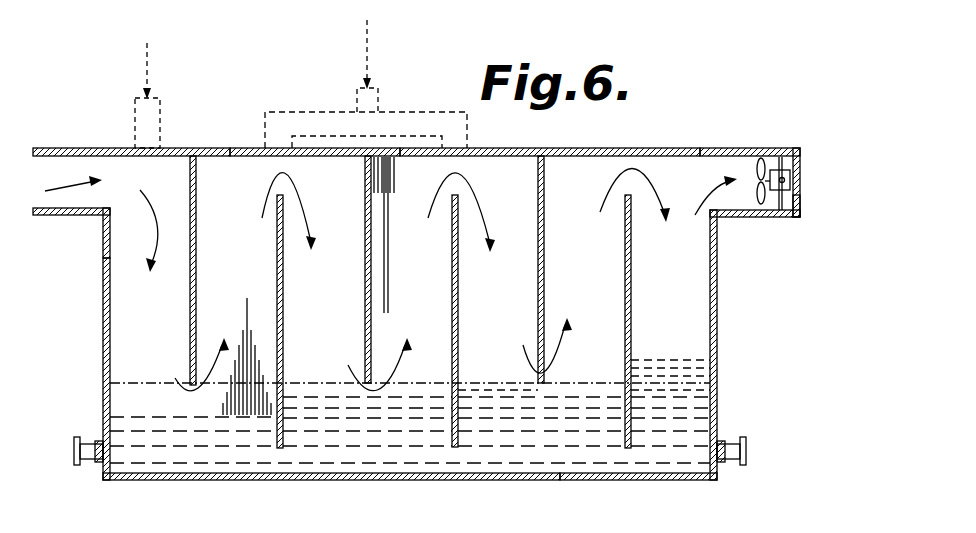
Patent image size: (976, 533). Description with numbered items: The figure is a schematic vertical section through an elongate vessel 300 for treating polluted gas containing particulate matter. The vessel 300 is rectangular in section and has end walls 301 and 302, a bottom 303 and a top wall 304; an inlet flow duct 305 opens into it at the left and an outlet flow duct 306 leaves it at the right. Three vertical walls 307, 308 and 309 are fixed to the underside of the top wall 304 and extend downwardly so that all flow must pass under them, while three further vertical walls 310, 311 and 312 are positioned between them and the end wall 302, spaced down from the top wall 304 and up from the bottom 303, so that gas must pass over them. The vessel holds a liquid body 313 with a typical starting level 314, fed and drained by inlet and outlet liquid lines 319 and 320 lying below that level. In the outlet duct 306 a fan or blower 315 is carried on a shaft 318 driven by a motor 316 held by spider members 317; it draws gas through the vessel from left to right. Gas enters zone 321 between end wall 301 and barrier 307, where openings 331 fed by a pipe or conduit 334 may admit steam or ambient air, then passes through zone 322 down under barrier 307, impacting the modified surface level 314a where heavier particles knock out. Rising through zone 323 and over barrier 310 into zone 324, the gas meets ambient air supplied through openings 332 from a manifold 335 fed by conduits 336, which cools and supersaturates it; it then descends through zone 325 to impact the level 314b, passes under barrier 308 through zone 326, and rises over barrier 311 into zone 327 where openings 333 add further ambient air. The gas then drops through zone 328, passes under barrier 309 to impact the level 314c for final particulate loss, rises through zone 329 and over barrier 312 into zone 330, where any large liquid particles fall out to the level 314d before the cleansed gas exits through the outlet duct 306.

The elongate vessel 300 is at (703, 93).
The end wall 301 is at (102, 246).
The end wall 302 is at (718, 305).
The bottom 303 is at (495, 480).
The top wall 304 is at (594, 147).
The inlet flow duct 305 is at (70, 147).
The outlet flow duct 306 is at (764, 147).
The vertical wall 307 is at (189, 308).
The vertical wall 308 is at (372, 314).
The vertical wall 309 is at (545, 236).
The vertical wall 310 is at (283, 340).
The vertical wall 311 is at (452, 246).
The vertical wall 312 is at (631, 306).
The liquid body 313 is at (634, 480).
The starting level 314 is at (160, 382).
The modified surface level 314a is at (176, 420).
The modified level 314b is at (350, 364).
The modified level 314c is at (470, 382).
The modified level 314d is at (690, 383).
The fan or blower 315 is at (762, 217).
The motor 316 is at (794, 218).
The spider members 317 is at (793, 147).
The shaft 318 is at (754, 180).
The inlet liquid line 319 is at (85, 437).
The outlet liquid line 320 is at (735, 437).
The zone 321 is at (122, 182).
The zone 322 is at (102, 316).
The zone 323 is at (237, 261).
The zone 324 is at (283, 183).
The zone 325 is at (324, 291).
The zone 326 is at (410, 235).
The zone 327 is at (452, 183).
The zone 328 is at (499, 298).
The zone 329 is at (582, 271).
The zone 330 is at (670, 271).
The openings 331 is at (148, 165).
The opening 332 is at (263, 147).
The openings 333 is at (453, 147).
The pipe or conduit 334 is at (160, 101).
The manifold 335 is at (322, 112).
The conduit or line 336 is at (378, 92).